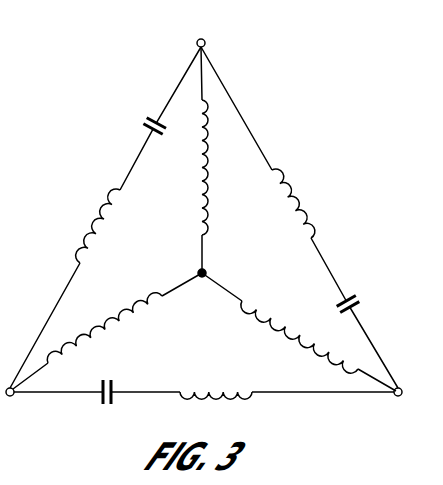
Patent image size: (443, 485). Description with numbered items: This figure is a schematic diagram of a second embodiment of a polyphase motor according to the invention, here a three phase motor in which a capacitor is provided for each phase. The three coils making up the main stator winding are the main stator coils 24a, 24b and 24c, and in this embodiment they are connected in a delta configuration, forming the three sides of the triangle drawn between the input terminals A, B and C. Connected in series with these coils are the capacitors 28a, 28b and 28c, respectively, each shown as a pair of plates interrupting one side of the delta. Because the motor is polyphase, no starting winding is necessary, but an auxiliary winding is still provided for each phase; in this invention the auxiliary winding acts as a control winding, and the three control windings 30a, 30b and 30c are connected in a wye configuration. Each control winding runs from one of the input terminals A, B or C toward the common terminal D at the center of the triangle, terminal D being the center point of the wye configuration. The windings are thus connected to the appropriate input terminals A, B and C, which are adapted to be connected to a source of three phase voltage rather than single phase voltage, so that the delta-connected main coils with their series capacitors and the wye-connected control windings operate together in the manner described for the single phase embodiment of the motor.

The main stator coil 24a is at (95, 213).
The main stator coil 24b is at (302, 202).
The main stator coil 24c is at (255, 396).
The capacitor 28a is at (141, 124).
The capacitor 28b is at (358, 300).
The capacitor 28c is at (108, 378).
The control winding 30a is at (204, 152).
The control winding 30b is at (240, 310).
The control winding 30c is at (122, 314).
The input terminal A is at (205, 40).
The input terminal B is at (400, 396).
The input terminal C is at (8, 396).
The terminal (center point) D is at (199, 278).